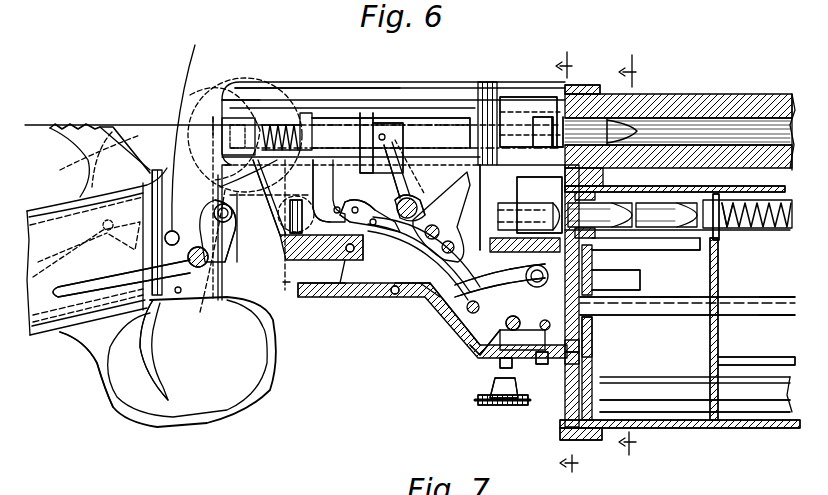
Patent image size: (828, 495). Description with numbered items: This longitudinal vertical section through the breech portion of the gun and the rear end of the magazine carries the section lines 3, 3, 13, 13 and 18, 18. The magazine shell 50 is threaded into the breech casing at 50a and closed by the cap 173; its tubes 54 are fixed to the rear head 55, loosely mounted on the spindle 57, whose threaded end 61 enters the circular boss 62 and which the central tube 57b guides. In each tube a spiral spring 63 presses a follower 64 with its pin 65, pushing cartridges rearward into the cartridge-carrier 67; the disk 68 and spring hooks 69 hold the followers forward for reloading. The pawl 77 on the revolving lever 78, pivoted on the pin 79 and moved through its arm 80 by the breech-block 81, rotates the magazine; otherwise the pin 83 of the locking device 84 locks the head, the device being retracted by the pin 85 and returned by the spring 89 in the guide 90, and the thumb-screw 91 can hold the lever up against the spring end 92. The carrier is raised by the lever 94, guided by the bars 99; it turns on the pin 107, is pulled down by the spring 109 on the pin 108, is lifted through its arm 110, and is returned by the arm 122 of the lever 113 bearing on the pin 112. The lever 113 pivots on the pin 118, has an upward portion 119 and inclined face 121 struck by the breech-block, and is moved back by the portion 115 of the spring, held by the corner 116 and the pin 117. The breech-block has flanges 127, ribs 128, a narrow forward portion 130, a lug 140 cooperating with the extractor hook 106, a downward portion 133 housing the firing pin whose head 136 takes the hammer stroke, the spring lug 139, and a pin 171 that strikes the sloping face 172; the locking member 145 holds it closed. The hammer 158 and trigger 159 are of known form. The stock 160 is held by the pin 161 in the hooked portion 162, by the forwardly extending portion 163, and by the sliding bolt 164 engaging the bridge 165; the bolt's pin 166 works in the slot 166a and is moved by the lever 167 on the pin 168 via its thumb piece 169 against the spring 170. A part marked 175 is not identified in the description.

The section line 3 3 is at (635, 71).
The section line 13 13 is at (574, 65).
The section line 18 18 is at (41, 133).
The magazine shell 50 is at (704, 428).
The threaded connection 50a is at (557, 462).
The cartridge tubes 54 is at (670, 408).
The rear head 55 is at (602, 432).
The axial spindle 57 is at (687, 306).
The central tube 57b is at (667, 298).
The threaded end of spindle 61 is at (605, 293).
The circular boss 62 is at (595, 265).
The spiral spring 63 is at (752, 227).
The follower 64 is at (717, 228).
The follower pin 65 is at (732, 190).
The cartridge-carrier 67 is at (539, 205).
The disk 68 is at (712, 422).
The spring hooks 69 is at (745, 363).
The pawl 77 is at (595, 330).
The revolving lever 78 is at (487, 322).
The lever pin 79 is at (510, 308).
The upwardly projecting arm 80 is at (407, 168).
The breech-block 81 is at (412, 118).
The locking pin 83 is at (587, 345).
The locking device 84 is at (589, 360).
The lateral pin 85 is at (543, 328).
The locking spring 89 is at (517, 330).
The guide 90 is at (510, 340).
The thumb-screw 91 is at (500, 388).
The spring end 92 is at (480, 352).
The cartridge-carrier lever 94 is at (425, 300).
The guide bars 99 is at (472, 200).
The extractor hook 106 is at (568, 110).
The carrier lever pin 107 is at (315, 285).
The spring pin 108 is at (372, 250).
The spring 109 is at (400, 278).
The upwardly extending arm 110 is at (327, 180).
The return pin 112 is at (327, 298).
The carrier lever lock 113 is at (333, 262).
The forward spring portion 115 is at (512, 100).
The lower corner of guide bar 116 is at (433, 305).
The spring-holding pin 117 is at (480, 402).
The lock lever pin 118 is at (437, 160).
The upwardly projecting portion 119 is at (520, 110).
The inclined face 121 is at (450, 173).
The downwardly and rearwardly extending arm 122 is at (300, 305).
The horizontal flanges 127 is at (360, 123).
The ribs 128 is at (298, 170).
The narrow forward portion 130 is at (548, 160).
The downwardly projecting portion 133 is at (245, 150).
The firing pin head 136 is at (226, 150).
The spring lug 139 is at (306, 128).
The forwardly projecting lug 140 is at (550, 115).
The locking member 145 is at (262, 140).
The hammer 158 is at (108, 138).
The trigger 159 is at (153, 388).
The stock 160 is at (33, 337).
The pin 161 is at (340, 298).
The hooked portion 162 is at (347, 285).
The forwardly extending portion 163 is at (360, 278).
The sliding bolt 164 is at (283, 262).
The transverse bridge 165 is at (290, 298).
The bolt pin 166 is at (238, 288).
The slot 166a is at (199, 126).
The bolt lever 167 is at (222, 265).
The lever pivot pin 168 is at (200, 285).
The thumb piece 169 is at (83, 337).
The bolt spring 170 is at (200, 312).
The stop pin 171 is at (303, 113).
The sloping face 172 is at (214, 130).
The cap 173 is at (408, 302).
The pin 175 is at (165, 232).